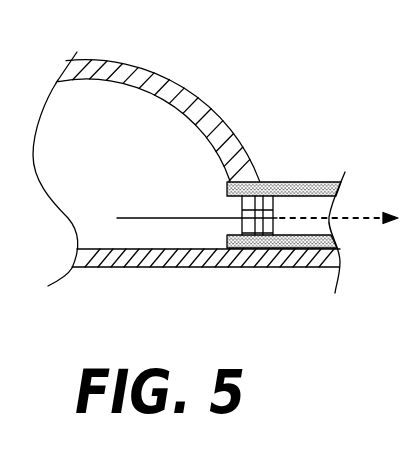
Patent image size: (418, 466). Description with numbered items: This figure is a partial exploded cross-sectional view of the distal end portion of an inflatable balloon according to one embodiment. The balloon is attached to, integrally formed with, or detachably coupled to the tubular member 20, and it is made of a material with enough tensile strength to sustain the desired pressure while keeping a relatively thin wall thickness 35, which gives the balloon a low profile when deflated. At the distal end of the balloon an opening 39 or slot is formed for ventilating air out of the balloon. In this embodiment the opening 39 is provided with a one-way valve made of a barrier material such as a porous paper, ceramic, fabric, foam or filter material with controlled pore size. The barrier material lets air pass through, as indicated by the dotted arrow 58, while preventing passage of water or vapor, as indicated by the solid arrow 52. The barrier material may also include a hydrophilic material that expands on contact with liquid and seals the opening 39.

The wall thickness 35 is at (145, 79).
The tubular member 20 is at (148, 268).
The opening 39 is at (305, 208).
The solid arrow 52 is at (163, 220).
The dotted arrow 58 is at (347, 218).